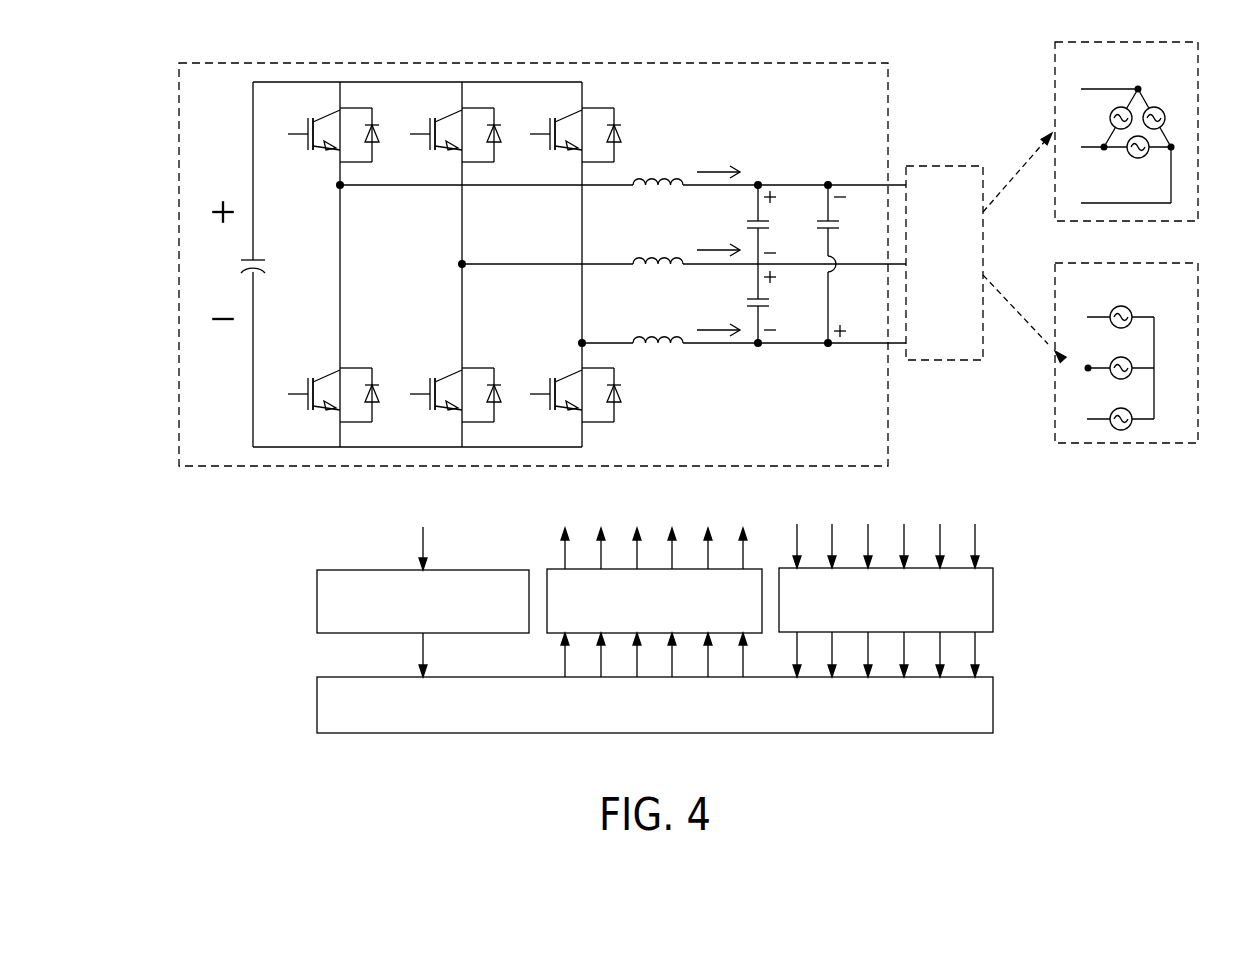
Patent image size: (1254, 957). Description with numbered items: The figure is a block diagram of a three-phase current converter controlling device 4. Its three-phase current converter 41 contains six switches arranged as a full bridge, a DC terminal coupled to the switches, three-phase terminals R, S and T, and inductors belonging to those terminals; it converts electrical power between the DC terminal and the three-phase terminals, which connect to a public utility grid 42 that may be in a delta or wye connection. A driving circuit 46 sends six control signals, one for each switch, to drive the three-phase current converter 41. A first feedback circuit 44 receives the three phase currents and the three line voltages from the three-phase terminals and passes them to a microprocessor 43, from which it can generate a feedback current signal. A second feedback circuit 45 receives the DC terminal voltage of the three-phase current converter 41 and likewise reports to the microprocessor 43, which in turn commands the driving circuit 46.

The three-phase current converter controlling device 4 is at (117, 62).
The three-phase current converter 41 is at (218, 467).
The public utility grid 42 is at (946, 166).
The microprocessor 43 is at (993, 703).
The first feedback circuit 44 is at (993, 601).
The second feedback circuit 45 is at (317, 600).
The driving circuit 46 is at (552, 569).